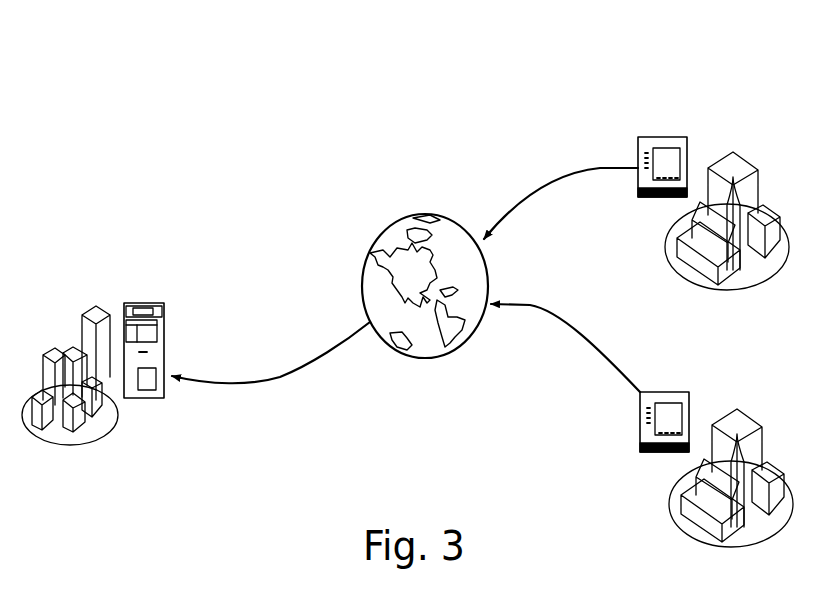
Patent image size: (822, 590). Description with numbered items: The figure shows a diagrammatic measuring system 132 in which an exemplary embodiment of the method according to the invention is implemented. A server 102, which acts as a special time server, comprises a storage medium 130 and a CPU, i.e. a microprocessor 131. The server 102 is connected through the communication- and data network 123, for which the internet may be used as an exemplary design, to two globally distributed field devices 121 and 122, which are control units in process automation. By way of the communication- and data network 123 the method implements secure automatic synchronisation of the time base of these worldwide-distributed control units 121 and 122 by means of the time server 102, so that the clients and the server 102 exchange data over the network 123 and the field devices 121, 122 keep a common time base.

The server 102 is at (146, 296).
The field device 121 is at (663, 121).
The field device 122 is at (599, 368).
The communication- and data network 123 is at (527, 204).
The storage medium 130 is at (148, 385).
The microprocessor 131 is at (158, 334).
The measuring system 132 is at (236, 176).